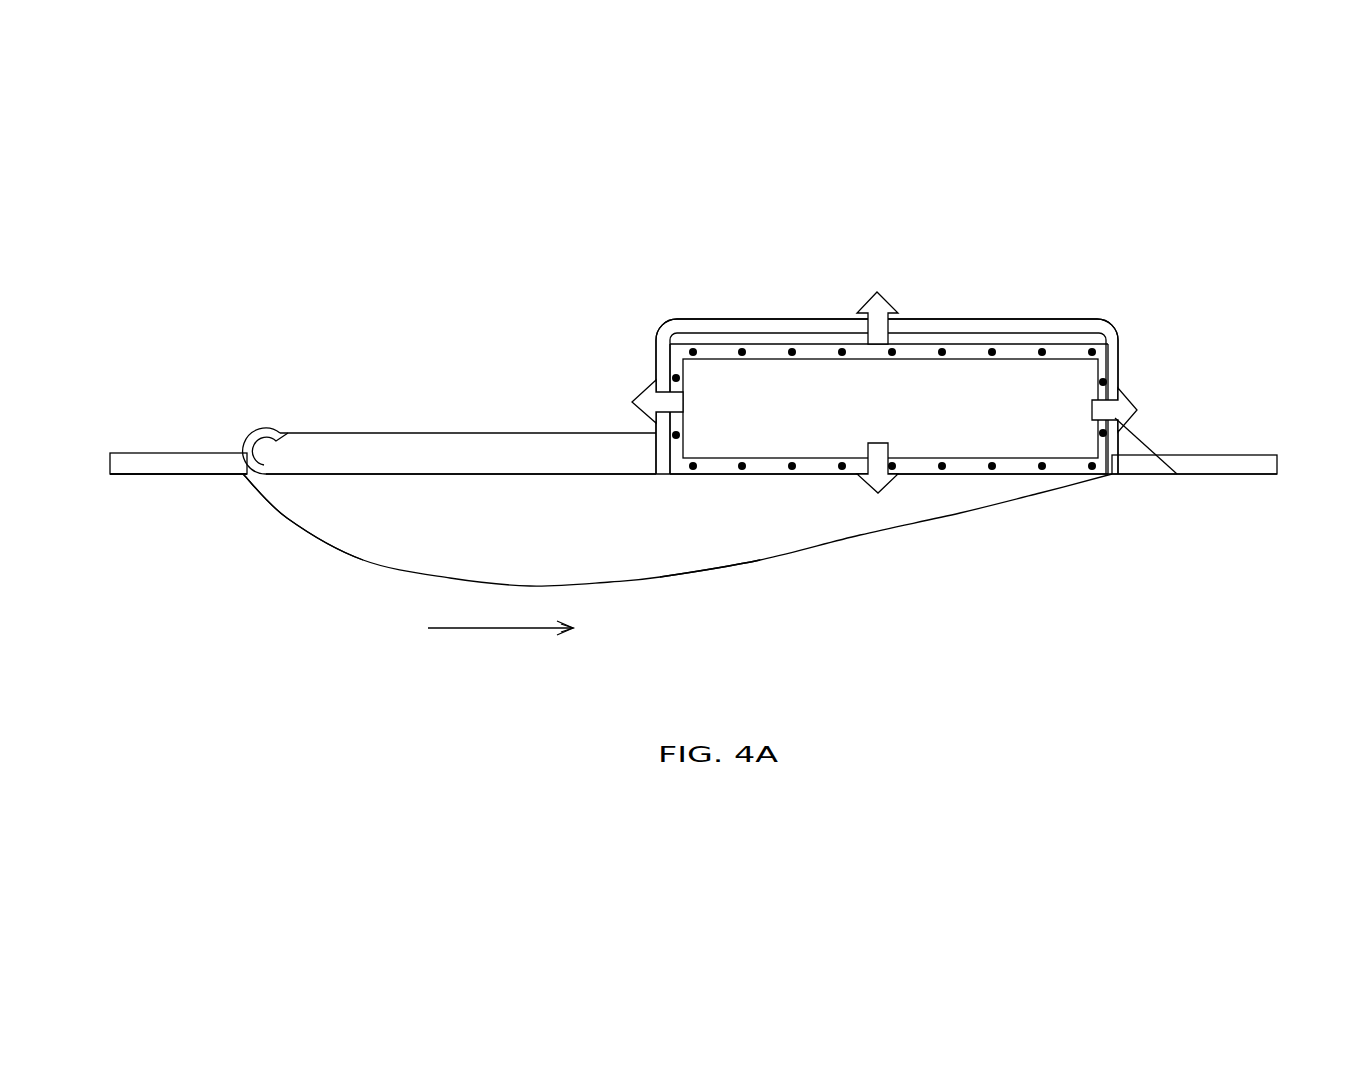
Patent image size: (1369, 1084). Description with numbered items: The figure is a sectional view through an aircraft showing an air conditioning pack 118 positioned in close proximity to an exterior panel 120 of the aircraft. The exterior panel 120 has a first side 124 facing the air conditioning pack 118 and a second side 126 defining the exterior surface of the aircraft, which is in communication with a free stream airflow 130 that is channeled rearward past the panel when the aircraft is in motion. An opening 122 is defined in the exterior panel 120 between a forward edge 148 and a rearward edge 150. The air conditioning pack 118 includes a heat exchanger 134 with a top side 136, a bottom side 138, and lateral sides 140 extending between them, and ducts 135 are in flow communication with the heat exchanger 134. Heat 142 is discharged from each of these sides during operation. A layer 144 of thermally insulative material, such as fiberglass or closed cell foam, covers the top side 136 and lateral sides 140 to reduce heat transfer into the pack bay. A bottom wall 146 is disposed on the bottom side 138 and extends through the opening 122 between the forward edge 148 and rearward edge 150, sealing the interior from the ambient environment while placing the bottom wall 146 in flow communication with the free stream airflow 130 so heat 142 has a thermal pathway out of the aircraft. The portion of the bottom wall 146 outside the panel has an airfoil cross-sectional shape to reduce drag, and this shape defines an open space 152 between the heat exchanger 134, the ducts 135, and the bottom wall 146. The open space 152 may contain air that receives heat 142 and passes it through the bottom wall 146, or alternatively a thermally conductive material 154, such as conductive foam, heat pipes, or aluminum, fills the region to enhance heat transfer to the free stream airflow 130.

The air conditioning pack 118 is at (897, 411).
The exterior panel 120 is at (1278, 463).
The opening 122 is at (287, 518).
The first side 124 is at (122, 452).
The second side 126 is at (140, 477).
The free stream airflow 130 is at (455, 630).
The heat exchanger 134 is at (1103, 297).
The ducts 135 is at (372, 476).
The top side 136 is at (1005, 340).
The bottom side 138 is at (1000, 478).
The lateral sides 140 is at (668, 365).
The heat 142 is at (642, 390).
The layer of thermally insulative material 144 is at (732, 319).
The bottom wall 146 is at (860, 537).
The forward edge 148 is at (278, 430).
The rearward edge 150 is at (1088, 483).
The open space 152 is at (556, 518).
The thermally conductive material 154 is at (705, 537).